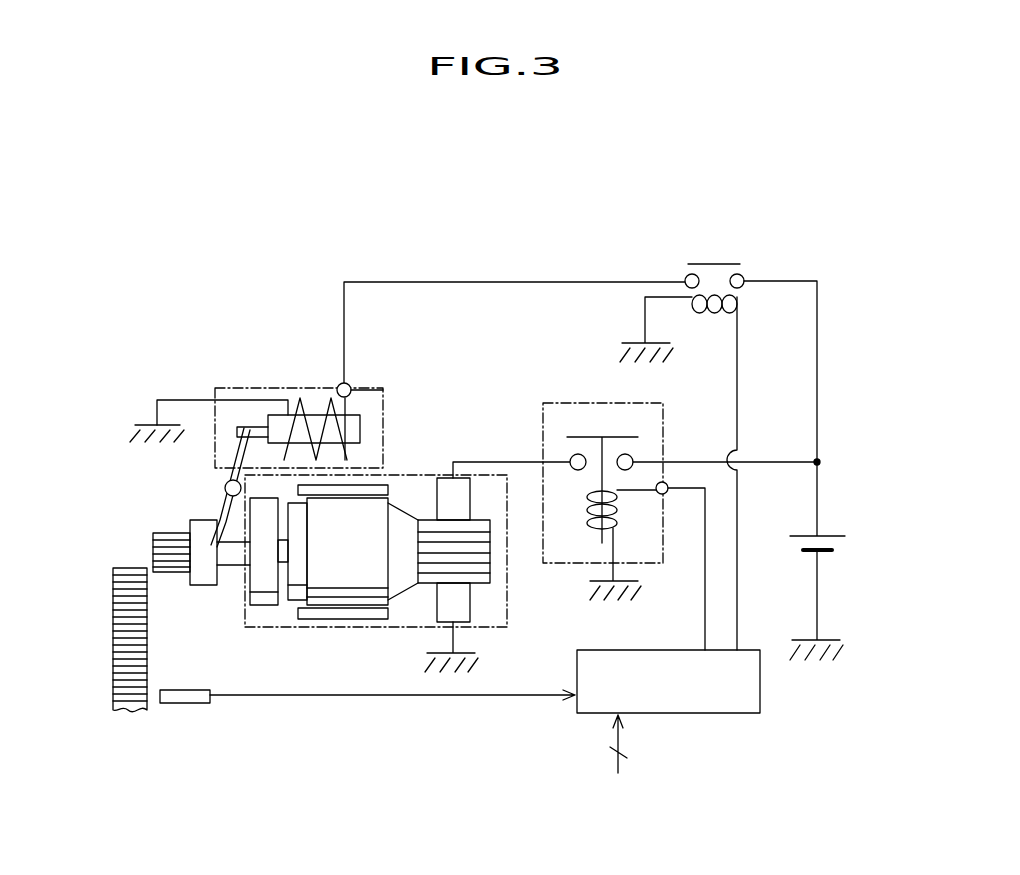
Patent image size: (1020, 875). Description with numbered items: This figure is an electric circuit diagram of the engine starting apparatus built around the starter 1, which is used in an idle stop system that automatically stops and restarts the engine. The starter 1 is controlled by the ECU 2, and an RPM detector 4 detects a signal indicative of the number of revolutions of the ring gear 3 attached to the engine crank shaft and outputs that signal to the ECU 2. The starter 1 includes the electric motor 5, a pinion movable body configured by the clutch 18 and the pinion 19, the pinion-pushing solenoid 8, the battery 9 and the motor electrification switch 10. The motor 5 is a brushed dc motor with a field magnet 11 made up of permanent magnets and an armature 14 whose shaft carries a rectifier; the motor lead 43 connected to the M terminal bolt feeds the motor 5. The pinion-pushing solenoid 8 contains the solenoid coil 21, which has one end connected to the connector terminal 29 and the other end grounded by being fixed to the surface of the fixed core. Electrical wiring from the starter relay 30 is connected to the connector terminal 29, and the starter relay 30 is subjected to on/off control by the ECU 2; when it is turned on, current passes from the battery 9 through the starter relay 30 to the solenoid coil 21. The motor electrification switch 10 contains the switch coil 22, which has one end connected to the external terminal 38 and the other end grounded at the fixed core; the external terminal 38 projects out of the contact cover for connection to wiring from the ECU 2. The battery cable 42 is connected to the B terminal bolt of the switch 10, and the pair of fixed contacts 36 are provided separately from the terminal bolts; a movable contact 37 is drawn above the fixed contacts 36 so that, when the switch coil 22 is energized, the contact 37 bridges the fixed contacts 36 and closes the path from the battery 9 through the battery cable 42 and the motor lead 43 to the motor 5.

The starter 1 is at (378, 260).
The ECU 2 is at (665, 715).
The ring gear 3 is at (120, 637).
The RPM detector 4 is at (185, 705).
The electric motor 5 is at (262, 632).
The pinion-pushing solenoid 8 is at (232, 392).
The battery 9 is at (838, 545).
The motor electrification switch 10 is at (562, 402).
The field magnet 11 is at (322, 619).
The armature 14 is at (373, 600).
The clutch 18 is at (200, 525).
The pinion 19 is at (170, 540).
The solenoid coil 21 is at (313, 402).
The switch coil 22 is at (590, 520).
The connector terminal 29 is at (351, 390).
The starter relay 30 is at (718, 262).
The fixed contacts 36 is at (619, 457).
The movable contact 37 is at (620, 436).
The external terminal 38 is at (666, 492).
The battery cable 42 is at (785, 460).
The motor lead 43 is at (468, 462).